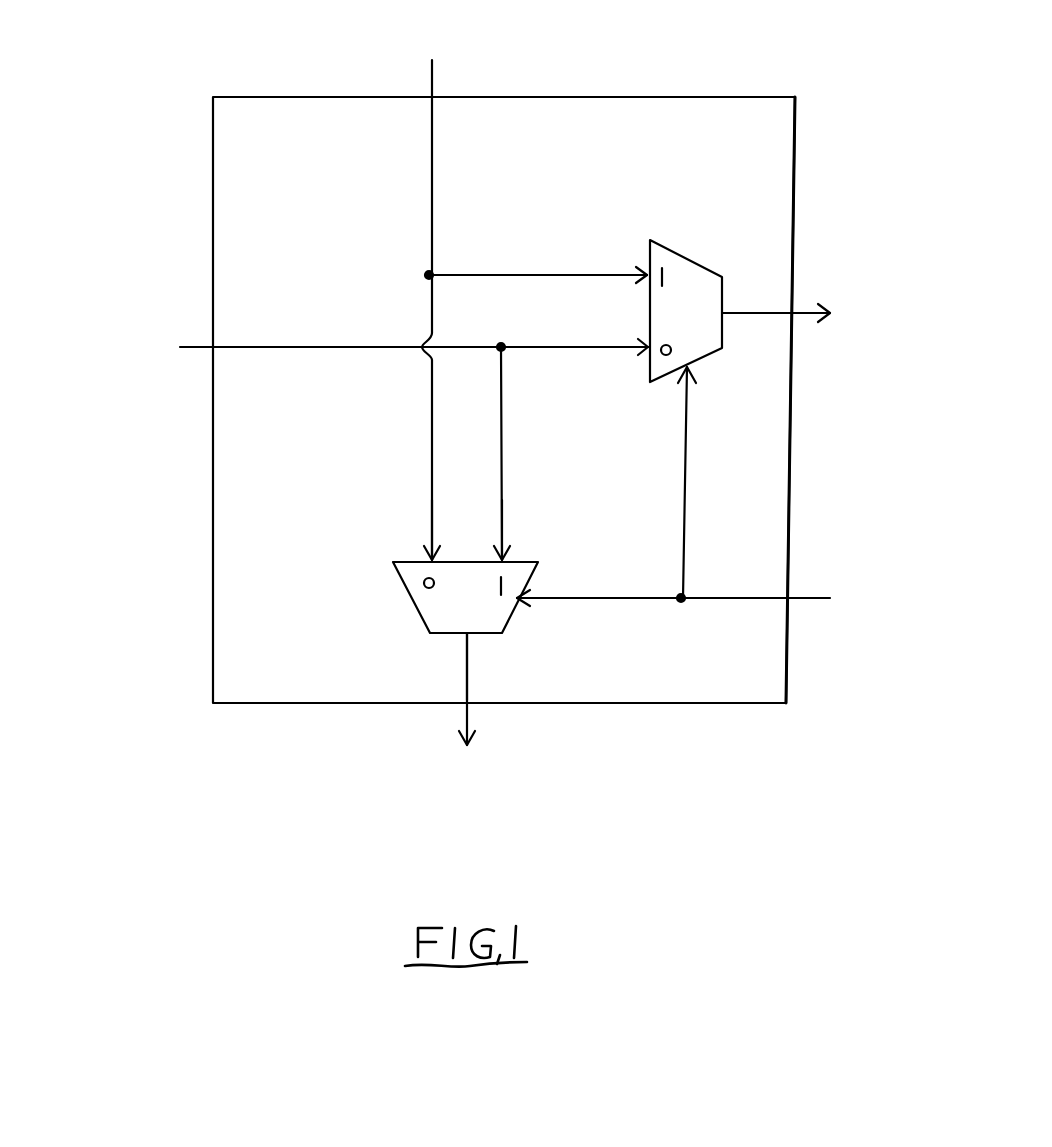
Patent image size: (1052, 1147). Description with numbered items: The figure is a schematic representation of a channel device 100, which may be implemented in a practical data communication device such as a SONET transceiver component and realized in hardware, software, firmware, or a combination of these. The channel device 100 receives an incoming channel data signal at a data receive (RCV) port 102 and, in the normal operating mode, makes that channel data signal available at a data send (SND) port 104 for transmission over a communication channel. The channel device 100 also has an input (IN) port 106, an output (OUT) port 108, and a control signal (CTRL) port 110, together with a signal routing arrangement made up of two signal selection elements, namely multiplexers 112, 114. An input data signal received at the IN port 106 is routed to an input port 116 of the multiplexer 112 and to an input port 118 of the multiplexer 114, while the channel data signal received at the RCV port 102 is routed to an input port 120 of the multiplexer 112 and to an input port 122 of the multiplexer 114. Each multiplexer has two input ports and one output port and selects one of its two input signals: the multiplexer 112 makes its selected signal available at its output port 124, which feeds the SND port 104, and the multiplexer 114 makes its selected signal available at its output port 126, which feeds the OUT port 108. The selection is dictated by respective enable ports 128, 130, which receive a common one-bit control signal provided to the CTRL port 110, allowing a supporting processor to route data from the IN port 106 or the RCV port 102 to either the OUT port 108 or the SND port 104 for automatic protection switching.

The channel device 100 is at (213, 145).
The data receive (RCV) port 102 is at (205, 332).
The data send (SND) port 104 is at (800, 283).
The input (IN) port 106 is at (445, 80).
The output (OUT) port 108 is at (480, 713).
The control signal (CTRL) port 110 is at (795, 610).
The multiplexer 112 is at (693, 257).
The multiplexer 114 is at (393, 597).
The input port of multiplexer 112 116 is at (648, 265).
The input port of multiplexer 114 118 is at (425, 558).
The input port of multiplexer 112 120 is at (648, 362).
The input port of multiplexer 114 122 is at (520, 558).
The output port of multiplexer 112 124 is at (722, 322).
The output port of multiplexer 114 126 is at (478, 638).
The enable port of multiplexer 112 128 is at (695, 365).
The enable port of multiplexer 114 130 is at (530, 583).